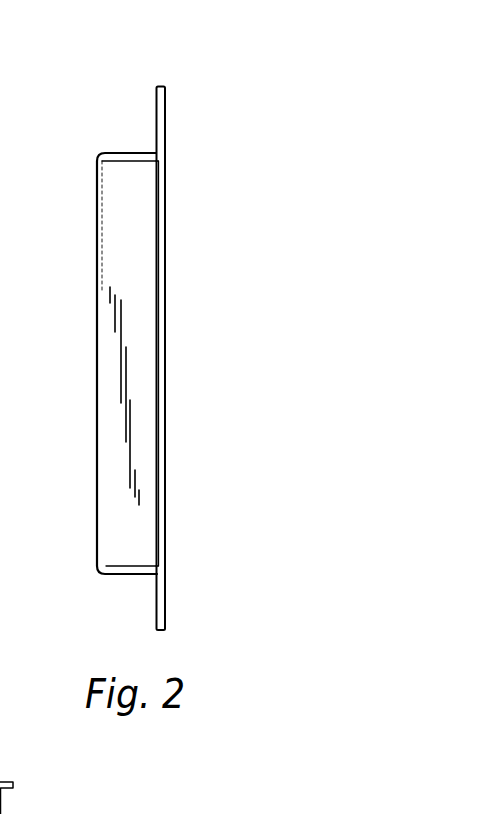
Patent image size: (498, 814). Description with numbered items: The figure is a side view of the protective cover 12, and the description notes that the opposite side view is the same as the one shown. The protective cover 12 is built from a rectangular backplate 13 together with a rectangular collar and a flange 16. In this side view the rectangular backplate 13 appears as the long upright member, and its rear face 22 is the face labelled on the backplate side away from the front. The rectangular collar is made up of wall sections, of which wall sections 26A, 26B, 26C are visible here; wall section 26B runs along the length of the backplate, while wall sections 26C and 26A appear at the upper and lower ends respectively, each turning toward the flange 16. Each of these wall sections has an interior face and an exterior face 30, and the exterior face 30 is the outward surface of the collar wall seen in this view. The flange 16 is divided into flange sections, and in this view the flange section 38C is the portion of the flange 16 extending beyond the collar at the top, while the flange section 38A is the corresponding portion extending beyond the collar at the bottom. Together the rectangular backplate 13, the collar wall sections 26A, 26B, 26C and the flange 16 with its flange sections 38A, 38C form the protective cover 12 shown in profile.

The protective cover 12 is at (176, 68).
The rectangular backplate 13 is at (97, 480).
The flange 16 is at (167, 224).
The rear face 22 is at (100, 305).
The wall section 26A is at (130, 583).
The wall section 26B is at (129, 253).
The wall section 26C is at (144, 145).
The exterior face 30 is at (145, 425).
The flange section 38A is at (172, 578).
The flange section 38C is at (177, 108).